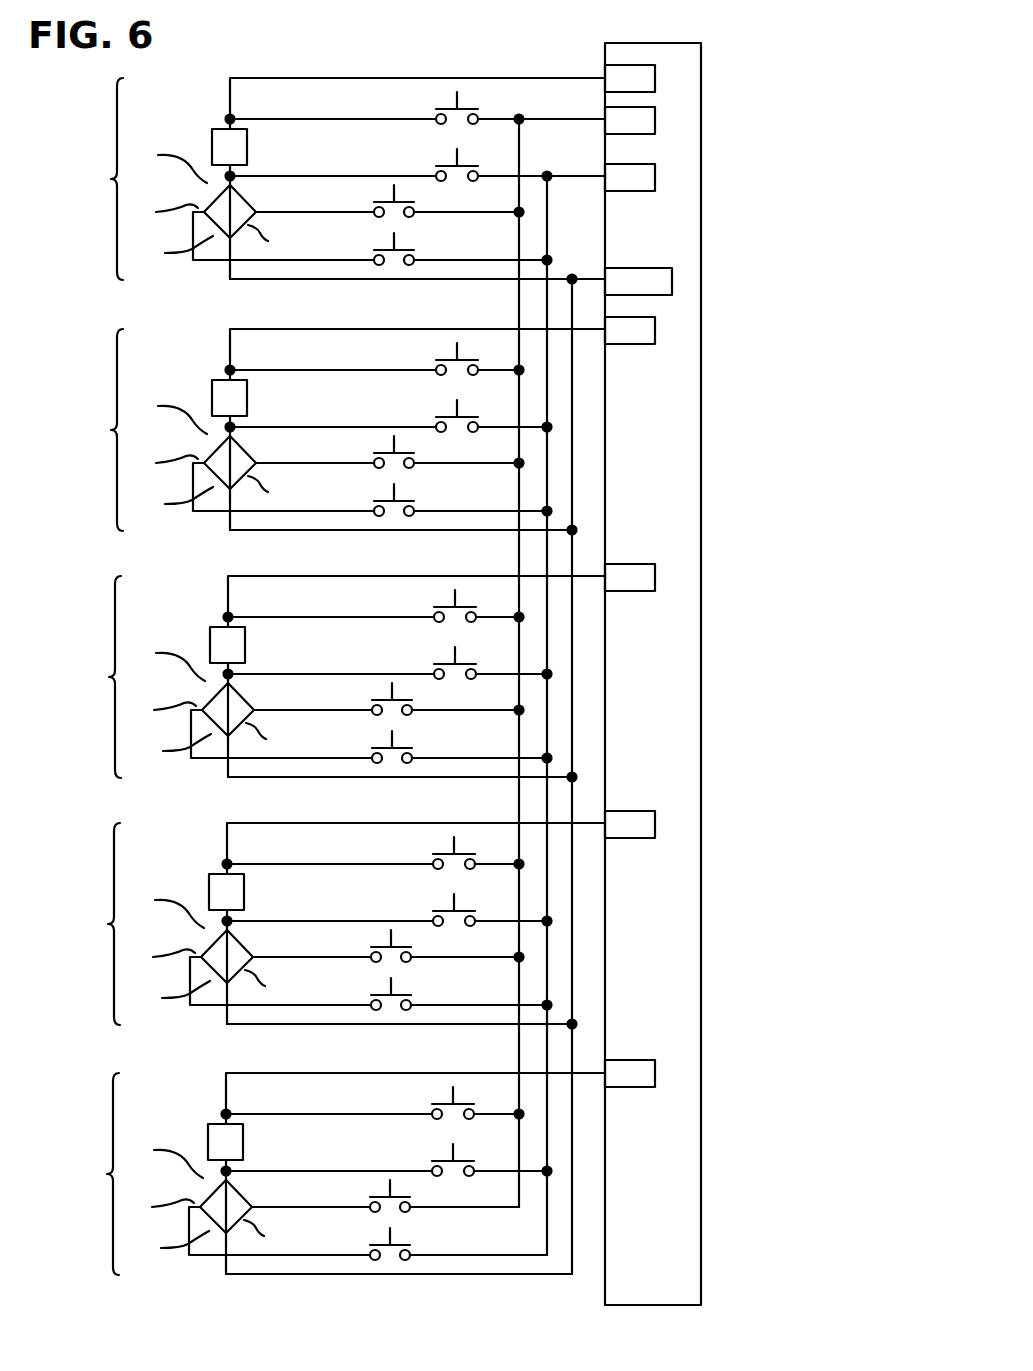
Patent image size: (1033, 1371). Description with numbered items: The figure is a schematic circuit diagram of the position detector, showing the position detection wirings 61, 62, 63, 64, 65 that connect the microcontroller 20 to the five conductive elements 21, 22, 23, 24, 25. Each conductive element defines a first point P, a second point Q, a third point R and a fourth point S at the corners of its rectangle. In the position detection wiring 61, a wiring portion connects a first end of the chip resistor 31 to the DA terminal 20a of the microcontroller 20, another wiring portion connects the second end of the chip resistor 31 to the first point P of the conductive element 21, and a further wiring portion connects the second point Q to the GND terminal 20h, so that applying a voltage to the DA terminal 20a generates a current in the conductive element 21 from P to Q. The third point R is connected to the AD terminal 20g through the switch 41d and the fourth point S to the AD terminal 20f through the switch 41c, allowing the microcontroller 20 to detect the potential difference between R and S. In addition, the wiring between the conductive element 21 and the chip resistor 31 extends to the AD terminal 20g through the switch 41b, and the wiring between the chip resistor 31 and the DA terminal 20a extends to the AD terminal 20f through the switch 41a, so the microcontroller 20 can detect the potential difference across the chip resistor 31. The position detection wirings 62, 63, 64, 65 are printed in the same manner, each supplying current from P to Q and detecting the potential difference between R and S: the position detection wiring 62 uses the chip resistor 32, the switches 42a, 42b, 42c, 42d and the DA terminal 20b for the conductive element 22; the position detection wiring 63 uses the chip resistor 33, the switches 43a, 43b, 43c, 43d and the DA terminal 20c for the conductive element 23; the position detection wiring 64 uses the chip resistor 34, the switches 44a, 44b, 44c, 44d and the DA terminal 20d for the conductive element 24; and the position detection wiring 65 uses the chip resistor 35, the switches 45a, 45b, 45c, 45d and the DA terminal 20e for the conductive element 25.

The microcontroller 20 is at (640, 43).
The DA terminal 20a is at (655, 78).
The DA terminal 20b is at (655, 330).
The DA terminal 20c is at (655, 577).
The DA terminal 20d is at (655, 824).
The DA terminal 20e is at (655, 1073).
The AD terminal 20f is at (655, 120).
The AD terminal 20g is at (655, 177).
The GND terminal 20h is at (672, 281).
The conductive element 21 is at (210, 196).
The conductive element 22 is at (210, 447).
The conductive element 23 is at (208, 694).
The conductive element 24 is at (207, 941).
The conductive element 25 is at (206, 1191).
The chip resistor 31 is at (208, 137).
The chip resistor 32 is at (208, 388).
The chip resistor 33 is at (206, 635).
The chip resistor 34 is at (205, 882).
The chip resistor 35 is at (204, 1132).
The switch 41a is at (453, 97).
The switch 41b is at (453, 154).
The switch 41c is at (390, 196).
The switch 41d is at (390, 239).
The switch 42a is at (453, 348).
The switch 42b is at (453, 405).
The switch 42c is at (390, 447).
The switch 42d is at (390, 490).
The switch 43a is at (451, 595).
The switch 43b is at (451, 652).
The switch 43c is at (388, 694).
The switch 43d is at (388, 737).
The switch 44a is at (450, 842).
The switch 44b is at (450, 899).
The switch 44c is at (387, 941).
The switch 44d is at (387, 984).
The switch 45a is at (449, 1092).
The switch 45b is at (449, 1149).
The switch 45c is at (386, 1191).
The switch 45d is at (386, 1234).
The position detection wiring 61 is at (344, 181).
The position detection wiring 62 is at (344, 432).
The position detection wiring 63 is at (343, 679).
The position detection wiring 64 is at (343, 926).
The position detection wiring 65 is at (342, 1174).